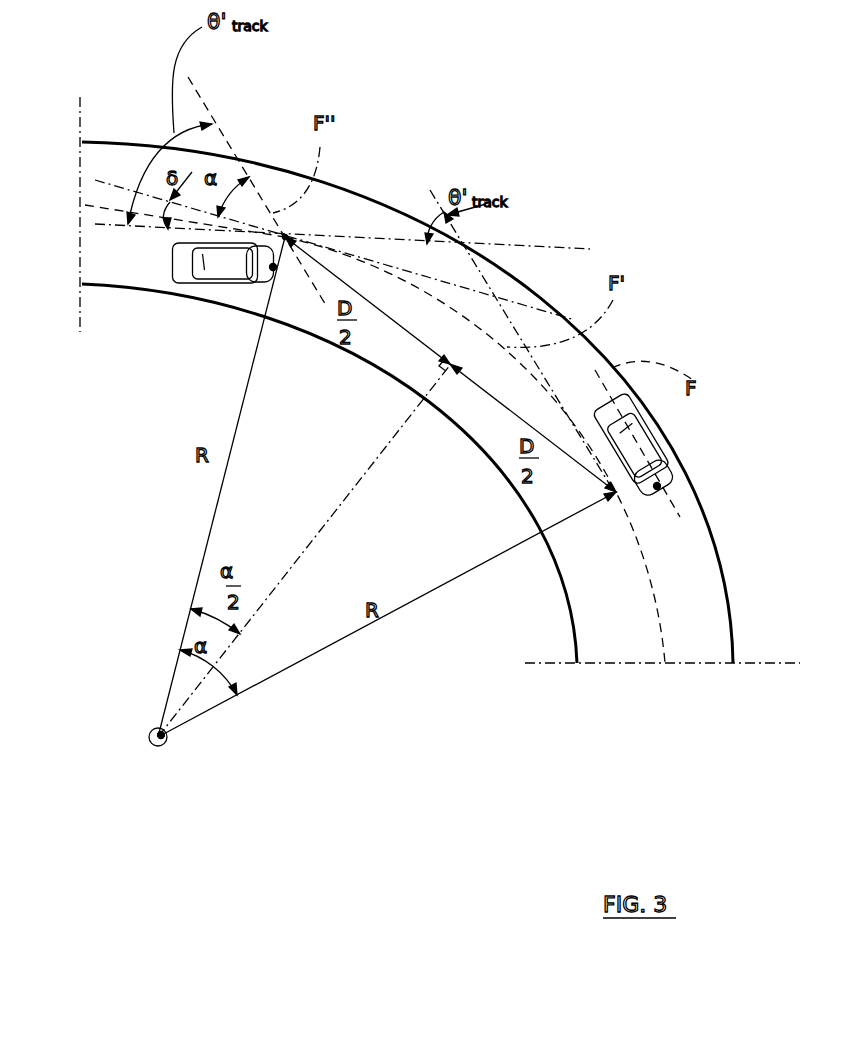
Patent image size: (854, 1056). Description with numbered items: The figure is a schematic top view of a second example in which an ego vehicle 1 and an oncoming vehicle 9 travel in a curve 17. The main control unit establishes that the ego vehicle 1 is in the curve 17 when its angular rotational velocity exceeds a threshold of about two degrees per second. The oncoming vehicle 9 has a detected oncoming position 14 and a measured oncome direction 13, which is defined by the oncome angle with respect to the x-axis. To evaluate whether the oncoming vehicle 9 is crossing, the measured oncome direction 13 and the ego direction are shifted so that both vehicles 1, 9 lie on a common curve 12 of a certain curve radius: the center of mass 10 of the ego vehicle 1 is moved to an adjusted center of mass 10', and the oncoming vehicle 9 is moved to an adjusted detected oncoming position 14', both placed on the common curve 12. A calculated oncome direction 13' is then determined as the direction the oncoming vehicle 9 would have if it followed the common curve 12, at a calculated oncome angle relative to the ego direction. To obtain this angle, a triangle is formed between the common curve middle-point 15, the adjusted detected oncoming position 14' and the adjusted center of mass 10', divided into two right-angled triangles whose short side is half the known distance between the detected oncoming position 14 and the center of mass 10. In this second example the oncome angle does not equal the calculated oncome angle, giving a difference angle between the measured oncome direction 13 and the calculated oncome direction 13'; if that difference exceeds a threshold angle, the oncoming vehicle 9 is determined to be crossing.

The ego vehicle 1 is at (643, 437).
The oncoming vehicle 9 is at (195, 283).
The center of mass 10 is at (720, 505).
The adjusted center of mass 10' is at (695, 532).
The common curve 12 is at (662, 613).
The measured oncome direction 13 is at (342, 180).
The calculated oncome direction 13' is at (335, 198).
The detected oncoming position 14 is at (227, 331).
The adjusted detected oncoming position 14' is at (325, 146).
The common curve middle-point 15 is at (170, 747).
The curve 17 is at (567, 597).